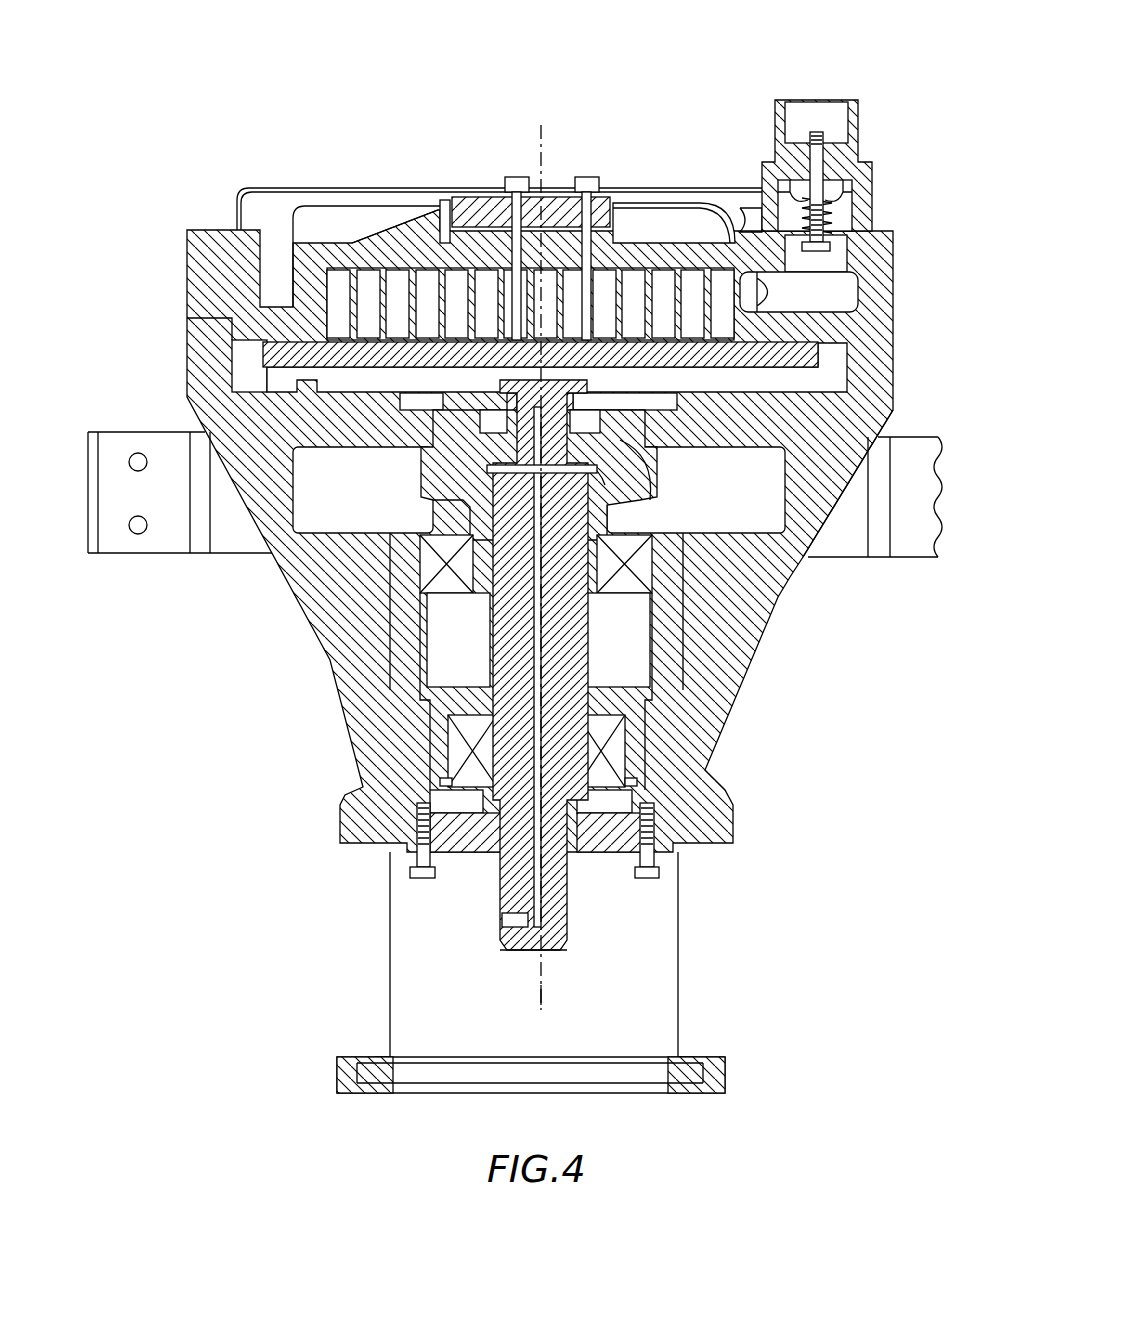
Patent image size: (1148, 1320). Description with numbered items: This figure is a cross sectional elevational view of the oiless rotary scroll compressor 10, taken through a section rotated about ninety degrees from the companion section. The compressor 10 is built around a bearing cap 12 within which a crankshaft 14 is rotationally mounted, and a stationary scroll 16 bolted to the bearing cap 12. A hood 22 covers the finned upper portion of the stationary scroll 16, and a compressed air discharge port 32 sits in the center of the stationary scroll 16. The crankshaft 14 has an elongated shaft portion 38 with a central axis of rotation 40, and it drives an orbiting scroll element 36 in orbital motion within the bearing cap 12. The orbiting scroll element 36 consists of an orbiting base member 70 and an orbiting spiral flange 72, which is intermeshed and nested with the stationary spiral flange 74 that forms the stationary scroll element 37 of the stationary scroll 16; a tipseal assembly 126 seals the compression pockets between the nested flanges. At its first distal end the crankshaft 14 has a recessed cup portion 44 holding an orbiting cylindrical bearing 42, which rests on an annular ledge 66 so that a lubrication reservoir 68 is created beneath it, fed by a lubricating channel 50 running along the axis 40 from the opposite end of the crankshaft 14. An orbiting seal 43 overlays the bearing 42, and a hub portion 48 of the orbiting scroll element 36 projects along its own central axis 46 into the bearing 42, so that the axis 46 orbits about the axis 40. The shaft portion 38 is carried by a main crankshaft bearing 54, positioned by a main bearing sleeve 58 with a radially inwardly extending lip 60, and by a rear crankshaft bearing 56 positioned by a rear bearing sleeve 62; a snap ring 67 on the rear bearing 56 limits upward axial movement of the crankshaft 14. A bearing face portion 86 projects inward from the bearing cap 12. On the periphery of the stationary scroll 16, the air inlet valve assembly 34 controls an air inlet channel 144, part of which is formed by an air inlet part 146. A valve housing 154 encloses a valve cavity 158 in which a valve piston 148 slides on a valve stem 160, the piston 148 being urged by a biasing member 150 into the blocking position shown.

The scroll compressor 10 is at (874, 784).
The bearing cap 12 is at (350, 680).
The crankshaft 14 is at (592, 652).
The stationary scroll 16 is at (310, 245).
The hood 22 is at (353, 187).
The compressed air discharge port 32 is at (480, 205).
The air inlet valve assembly 34 is at (839, 132).
The orbiting scroll element 36 is at (258, 358).
The stationary scroll element 37 is at (370, 292).
The elongated shaft portion 38 is at (555, 902).
The central axis of rotation 40 is at (540, 995).
The orbiting cylindrical bearing 42 is at (615, 471).
The orbiting seal 43 is at (493, 422).
The recessed cup portion 44 is at (577, 467).
The central axis 46 is at (548, 133).
The hub portion 48 is at (527, 445).
The lubricating channel 50 is at (533, 630).
The main crankshaft bearing 54 is at (433, 557).
The rear crankshaft bearing 56 is at (455, 743).
The main bearing sleeve 58 is at (673, 577).
The radially inwardly extending lip 60 is at (423, 630).
The rear bearing sleeve 62 is at (637, 732).
The annular ledge 66 is at (577, 458).
The snap ring 67 is at (445, 782).
The lubrication reservoir 68 is at (600, 477).
The orbiting base member 70 is at (807, 357).
The orbiting spiral flange 72 is at (713, 277).
The stationary spiral flange 74 is at (427, 300).
The bearing face portion 86 is at (780, 407).
The tipseal assembly 126 is at (507, 326).
The air inlet channel 144 is at (850, 290).
The air inlet part 146 is at (837, 262).
The valve piston 148 is at (837, 178).
The biasing member 150 is at (823, 208).
The valve housing 154 is at (860, 142).
The valve cavity 158 is at (847, 218).
The valve stem 160 is at (817, 162).